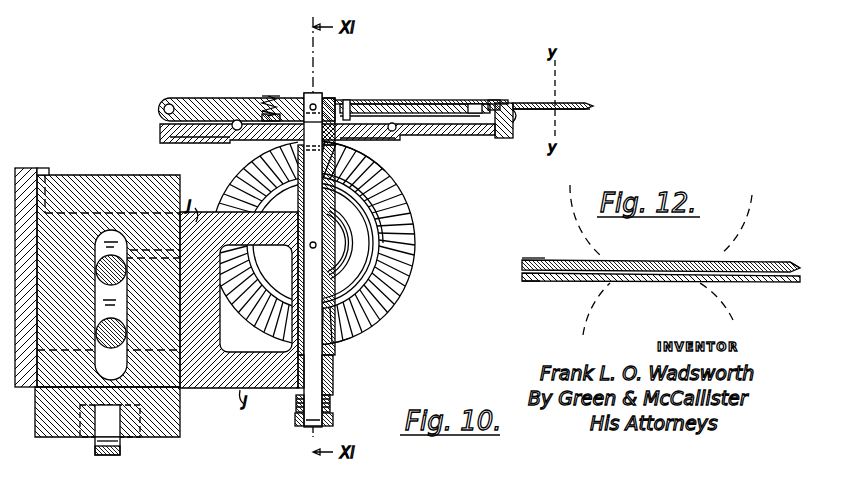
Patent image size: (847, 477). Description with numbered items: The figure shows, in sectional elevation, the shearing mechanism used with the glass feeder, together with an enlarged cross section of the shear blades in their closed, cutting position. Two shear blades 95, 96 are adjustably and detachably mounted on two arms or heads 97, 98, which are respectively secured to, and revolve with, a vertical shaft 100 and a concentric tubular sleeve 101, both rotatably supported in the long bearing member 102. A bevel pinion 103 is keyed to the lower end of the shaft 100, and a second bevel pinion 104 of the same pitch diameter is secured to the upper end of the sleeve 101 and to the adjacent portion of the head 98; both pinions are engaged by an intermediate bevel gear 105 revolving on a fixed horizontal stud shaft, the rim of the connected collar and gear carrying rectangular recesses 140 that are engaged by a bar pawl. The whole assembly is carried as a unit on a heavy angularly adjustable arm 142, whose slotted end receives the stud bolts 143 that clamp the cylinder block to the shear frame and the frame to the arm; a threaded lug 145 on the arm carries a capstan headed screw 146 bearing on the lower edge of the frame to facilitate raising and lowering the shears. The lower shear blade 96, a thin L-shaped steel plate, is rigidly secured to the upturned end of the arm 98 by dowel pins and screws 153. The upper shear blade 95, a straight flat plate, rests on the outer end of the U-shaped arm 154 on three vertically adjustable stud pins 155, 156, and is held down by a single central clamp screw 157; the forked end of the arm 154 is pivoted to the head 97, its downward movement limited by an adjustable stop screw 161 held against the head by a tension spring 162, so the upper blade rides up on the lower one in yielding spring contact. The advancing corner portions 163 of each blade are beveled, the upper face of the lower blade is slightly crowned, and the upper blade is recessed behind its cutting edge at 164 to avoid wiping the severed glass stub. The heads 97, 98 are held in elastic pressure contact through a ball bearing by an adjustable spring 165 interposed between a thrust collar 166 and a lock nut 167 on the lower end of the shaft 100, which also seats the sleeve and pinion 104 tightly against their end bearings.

In FIG. 10, the upper shear blade 95 is at (568, 103).
In FIG. 12, the upper shear blade 95 is at (572, 260).
In FIG. 10, the lower shear blade 96 is at (585, 109).
In FIG. 12, the lower shear blade 96 is at (757, 283).
In FIG. 10, the arm or head 97 is at (215, 98).
In FIG. 10, the arm or head 98 is at (458, 135).
In FIG. 10, the vertical shaft 100 is at (306, 93).
In FIG. 10, the tubular sleeve 101 is at (335, 210).
In FIG. 10, the bearing member 102 is at (337, 228).
In FIG. 10, the bevel pinion 103 is at (352, 345).
In FIG. 10, the bevel pinion 104 is at (345, 151).
In FIG. 10, the intermediate bevel gear 105 is at (385, 240).
In FIG. 10, the rectangular recesses 140 is at (385, 176).
In FIG. 10, the angularly adjustable arm 142 is at (135, 178).
In FIG. 10, the stud bolts 143 is at (108, 255).
In FIG. 10, the threaded lug 145 is at (163, 428).
In FIG. 10, the capstan headed screw 146 is at (120, 444).
In FIG. 10, the dowel pins and screws 153 is at (513, 127).
In FIG. 10, the U-shaped arm 154 is at (475, 104).
In FIG. 10, the stud pin 155 is at (375, 100).
In FIG. 10, the stud pins 156 is at (492, 100).
In FIG. 10, the clamp screw 157 is at (432, 104).
In FIG. 10, the adjustable stop screw 161 is at (346, 100).
In FIG. 10, the tension spring 162 is at (270, 96).
In FIG. 12, the beveled corner portions 163 is at (795, 264).
In FIG. 12, the recessed portion 164 is at (540, 259).
In FIG. 10, the adjustable spring 165 is at (331, 398).
In FIG. 10, the thrust collar 166 is at (333, 388).
In FIG. 10, the lock nut 167 is at (334, 419).